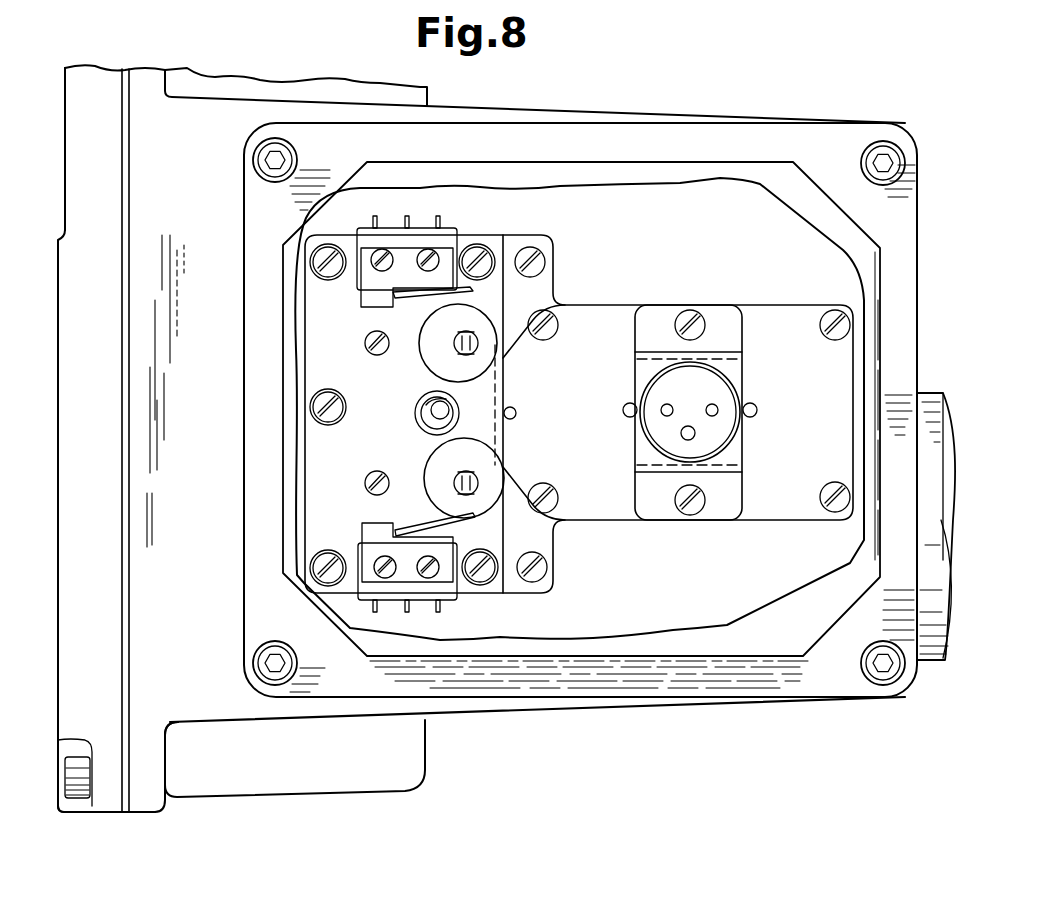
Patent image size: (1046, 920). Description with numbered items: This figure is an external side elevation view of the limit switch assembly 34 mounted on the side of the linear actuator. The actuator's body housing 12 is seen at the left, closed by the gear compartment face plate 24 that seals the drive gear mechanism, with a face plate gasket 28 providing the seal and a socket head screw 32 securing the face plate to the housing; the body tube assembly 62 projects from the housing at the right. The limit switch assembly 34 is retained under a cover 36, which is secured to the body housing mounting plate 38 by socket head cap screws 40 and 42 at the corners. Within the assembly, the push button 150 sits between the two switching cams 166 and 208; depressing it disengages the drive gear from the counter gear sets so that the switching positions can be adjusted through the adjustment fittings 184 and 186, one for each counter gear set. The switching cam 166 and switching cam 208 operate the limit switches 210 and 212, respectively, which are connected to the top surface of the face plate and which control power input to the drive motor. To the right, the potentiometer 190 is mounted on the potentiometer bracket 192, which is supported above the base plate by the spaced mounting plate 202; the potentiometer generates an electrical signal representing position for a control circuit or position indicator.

The body housing 12 is at (158, 813).
The gear compartment face plate 24 is at (72, 78).
The face plate gasket 28 is at (120, 822).
The socket head screw 32 is at (77, 758).
The limit switch assembly 34 is at (579, 625).
The cover 36 is at (700, 660).
The body housing mounting plate 38 is at (260, 721).
The socket head cap screw 40 is at (298, 164).
The socket head cap screw 42 is at (298, 664).
The body tube assembly 62 is at (918, 695).
The push button 150 is at (438, 411).
The switching cam 166 is at (432, 356).
The adjustment fitting 184 is at (365, 339).
The adjustment fitting 186 is at (366, 477).
The potentiometer 190 is at (665, 436).
The potentiometer bracket 192 is at (647, 494).
The spaced mounting plate 202 is at (780, 494).
The switching cam 208 is at (432, 468).
The limit switch 210 is at (425, 227).
The limit switch 212 is at (423, 601).